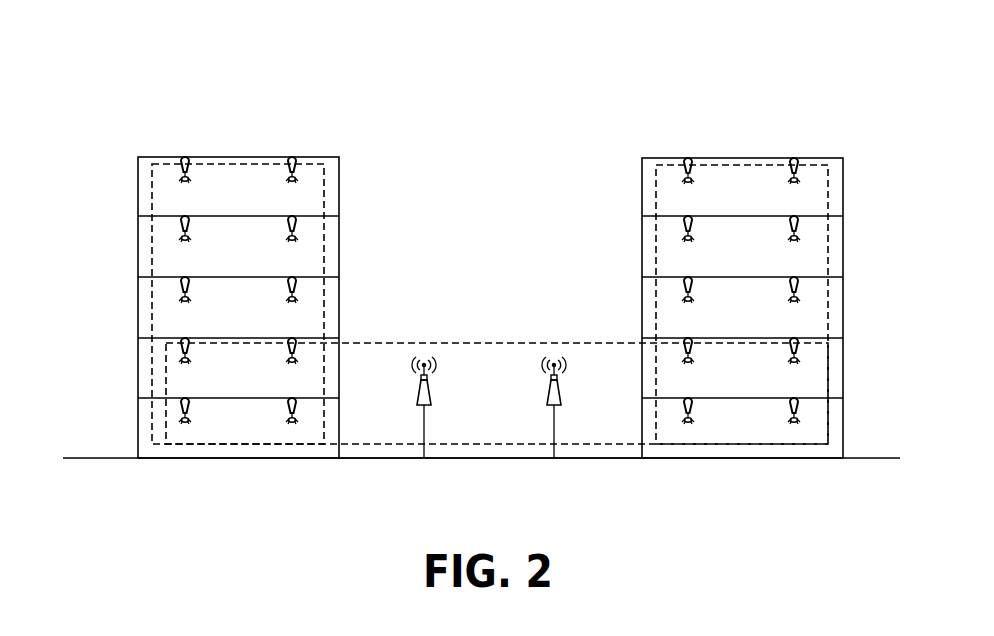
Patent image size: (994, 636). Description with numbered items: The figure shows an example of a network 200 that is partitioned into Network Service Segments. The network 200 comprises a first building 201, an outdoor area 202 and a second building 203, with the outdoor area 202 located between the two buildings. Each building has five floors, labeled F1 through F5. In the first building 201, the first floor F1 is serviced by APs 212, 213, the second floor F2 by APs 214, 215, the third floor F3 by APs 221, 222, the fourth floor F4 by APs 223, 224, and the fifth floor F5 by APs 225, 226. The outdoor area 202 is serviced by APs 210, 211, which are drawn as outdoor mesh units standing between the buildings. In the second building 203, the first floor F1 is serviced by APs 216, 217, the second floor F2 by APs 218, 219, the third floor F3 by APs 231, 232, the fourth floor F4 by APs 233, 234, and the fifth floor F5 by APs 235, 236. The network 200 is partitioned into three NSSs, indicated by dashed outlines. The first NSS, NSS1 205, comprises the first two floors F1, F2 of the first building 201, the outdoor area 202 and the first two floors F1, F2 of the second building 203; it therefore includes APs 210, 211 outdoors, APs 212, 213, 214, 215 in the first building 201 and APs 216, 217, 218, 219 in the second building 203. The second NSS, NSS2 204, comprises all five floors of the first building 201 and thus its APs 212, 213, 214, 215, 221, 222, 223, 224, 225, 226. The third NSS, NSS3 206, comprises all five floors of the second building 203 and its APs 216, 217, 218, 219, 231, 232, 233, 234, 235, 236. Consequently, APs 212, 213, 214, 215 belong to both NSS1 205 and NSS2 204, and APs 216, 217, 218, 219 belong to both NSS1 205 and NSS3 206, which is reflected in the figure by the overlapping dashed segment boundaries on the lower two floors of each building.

The network 200 is at (320, 56).
The first building 201 is at (237, 157).
The outdoor area 202 is at (594, 440).
The second building 203 is at (748, 158).
The second NSS (NSS2) 204 is at (140, 185).
The first NSS (NSS1) 205 is at (497, 318).
The third NSS (NSS3) 206 is at (824, 185).
The AP 210 is at (421, 387).
The AP 211 is at (550, 387).
The AP 212 is at (292, 422).
The AP 213 is at (186, 405).
The AP 214 is at (186, 346).
The AP 215 is at (293, 344).
The AP 216 is at (688, 422).
The AP 217 is at (795, 405).
The AP 218 is at (688, 344).
The AP 219 is at (795, 344).
The AP 221 is at (185, 283).
The AP 222 is at (293, 283).
The AP 223 is at (184, 222).
The AP 224 is at (293, 224).
The AP 225 is at (186, 158).
The AP 226 is at (293, 162).
The AP 231 is at (688, 283).
The AP 232 is at (795, 283).
The AP 233 is at (688, 222).
The AP 234 is at (795, 222).
The AP 235 is at (688, 162).
The AP 236 is at (795, 160).